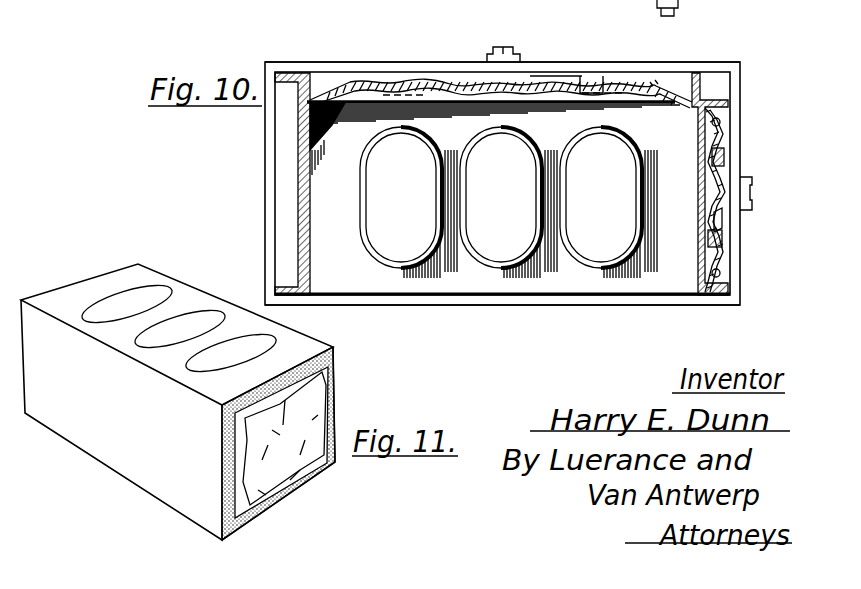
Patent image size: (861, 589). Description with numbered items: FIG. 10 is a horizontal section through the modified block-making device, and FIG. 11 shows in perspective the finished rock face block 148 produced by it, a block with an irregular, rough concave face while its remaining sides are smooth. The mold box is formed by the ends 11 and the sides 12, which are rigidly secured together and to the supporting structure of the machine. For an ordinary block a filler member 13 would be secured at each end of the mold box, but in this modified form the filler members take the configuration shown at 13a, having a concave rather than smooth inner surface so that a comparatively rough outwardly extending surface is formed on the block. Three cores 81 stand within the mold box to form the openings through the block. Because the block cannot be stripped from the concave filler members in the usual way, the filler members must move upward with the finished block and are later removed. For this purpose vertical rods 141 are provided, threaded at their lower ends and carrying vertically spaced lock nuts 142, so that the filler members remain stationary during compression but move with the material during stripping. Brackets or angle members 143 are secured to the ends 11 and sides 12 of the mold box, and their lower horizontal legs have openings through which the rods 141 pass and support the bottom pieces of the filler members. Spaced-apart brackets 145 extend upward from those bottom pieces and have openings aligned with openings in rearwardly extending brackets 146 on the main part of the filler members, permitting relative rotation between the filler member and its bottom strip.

In FIG. 10, the end of the mold box 11 is at (274, 160).
In FIG. 10, the side of the mold box 12 is at (383, 68).
In FIG. 10, the filler member 13 is at (286, 72).
In FIG. 10, the concave filler member 13a is at (713, 97).
In FIG. 10, the core 81 is at (387, 236).
In FIG. 10, the vertical rod 141 is at (340, 78).
In FIG. 10, the lock nut 142 is at (487, 82).
In FIG. 10, the bracket or angle member 143 is at (500, 44).
In FIG. 10, the bracket 145 is at (592, 78).
In FIG. 10, the rearwardly extending bracket 146 is at (537, 80).
In FIG. 11, the rock face block 148 is at (145, 457).